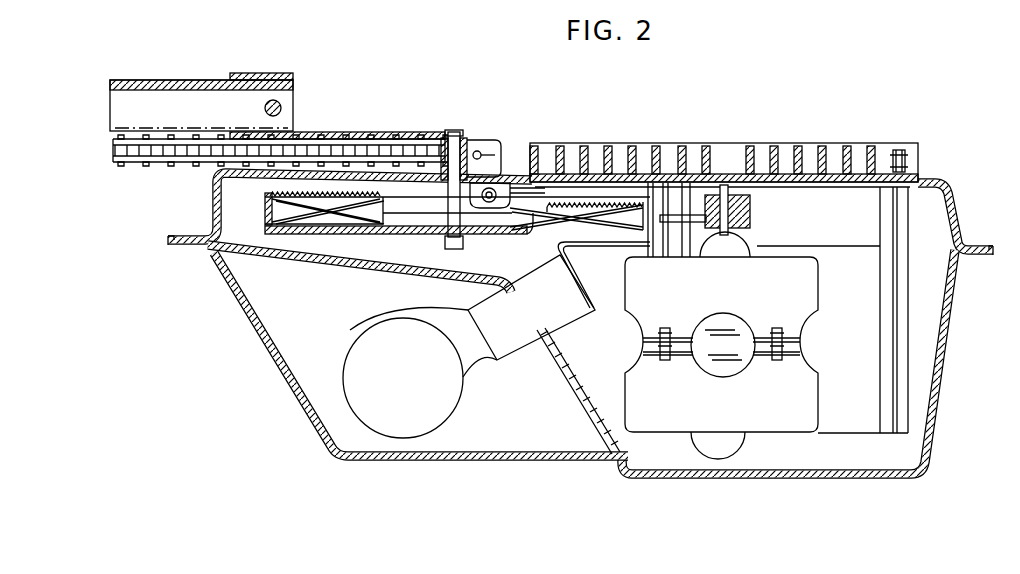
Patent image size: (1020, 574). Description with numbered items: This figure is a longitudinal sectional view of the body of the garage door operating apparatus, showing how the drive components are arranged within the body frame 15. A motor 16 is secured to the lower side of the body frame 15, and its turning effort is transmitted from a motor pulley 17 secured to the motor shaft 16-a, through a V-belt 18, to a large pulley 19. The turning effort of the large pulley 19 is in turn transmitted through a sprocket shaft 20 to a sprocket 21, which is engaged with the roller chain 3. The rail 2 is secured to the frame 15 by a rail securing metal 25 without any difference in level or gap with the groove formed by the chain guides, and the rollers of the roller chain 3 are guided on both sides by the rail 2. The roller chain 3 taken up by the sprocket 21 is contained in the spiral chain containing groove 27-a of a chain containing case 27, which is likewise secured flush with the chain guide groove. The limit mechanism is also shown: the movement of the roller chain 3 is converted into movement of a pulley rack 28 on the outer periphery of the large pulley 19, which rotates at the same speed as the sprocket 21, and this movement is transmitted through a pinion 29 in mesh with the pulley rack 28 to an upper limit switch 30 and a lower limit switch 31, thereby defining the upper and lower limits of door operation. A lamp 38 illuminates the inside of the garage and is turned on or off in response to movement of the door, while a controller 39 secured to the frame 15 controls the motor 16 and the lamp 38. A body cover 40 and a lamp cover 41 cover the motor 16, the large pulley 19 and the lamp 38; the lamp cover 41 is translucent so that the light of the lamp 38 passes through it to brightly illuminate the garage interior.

The rail 2 is at (183, 82).
The rail securing metal 25 is at (272, 74).
The roller chain 3 is at (322, 150).
The upper limit switch 30 is at (438, 182).
The sprocket shaft 20 is at (454, 130).
The sprocket 21 is at (464, 150).
The pinion 29 is at (496, 188).
The lower limit switch 31 is at (536, 191).
The motor shaft 16-a is at (723, 185).
The motor pulley 17 is at (746, 206).
The spiral chain containing groove 27-a is at (876, 158).
The chain containing case 27 is at (921, 165).
The body frame 15 is at (950, 210).
The body cover 40 is at (948, 336).
The large pulley 19 is at (386, 234).
The pulley rack 28 is at (605, 208).
The V-belt 18 is at (687, 230).
The lamp cover 41 is at (300, 420).
The lamp 38 is at (447, 420).
The motor 16 is at (783, 432).
The controller 39 is at (857, 434).